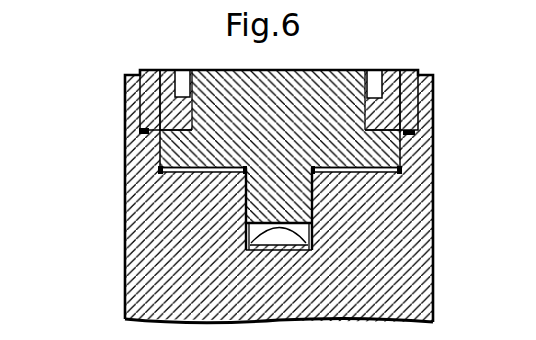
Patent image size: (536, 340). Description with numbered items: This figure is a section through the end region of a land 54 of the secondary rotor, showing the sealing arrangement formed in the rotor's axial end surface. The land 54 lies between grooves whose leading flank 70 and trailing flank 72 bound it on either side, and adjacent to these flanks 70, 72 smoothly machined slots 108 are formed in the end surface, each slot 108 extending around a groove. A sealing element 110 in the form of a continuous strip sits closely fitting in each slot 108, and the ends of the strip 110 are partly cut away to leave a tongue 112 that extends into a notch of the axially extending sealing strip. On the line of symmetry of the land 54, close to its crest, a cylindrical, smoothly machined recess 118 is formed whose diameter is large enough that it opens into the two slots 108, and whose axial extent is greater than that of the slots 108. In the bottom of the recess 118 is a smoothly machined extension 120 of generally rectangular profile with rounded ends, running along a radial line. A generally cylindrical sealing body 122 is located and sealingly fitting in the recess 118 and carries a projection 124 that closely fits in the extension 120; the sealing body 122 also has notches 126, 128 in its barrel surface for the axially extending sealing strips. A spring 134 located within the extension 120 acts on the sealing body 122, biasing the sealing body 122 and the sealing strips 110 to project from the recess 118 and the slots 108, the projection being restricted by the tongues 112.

The land 54 is at (387, 298).
The leading flank 70 is at (124, 284).
The trailing flank 72 is at (433, 278).
The slot 108 is at (157, 132).
The sealing element 110 is at (150, 80).
The tongue 112 is at (167, 113).
The recess 118 is at (160, 170).
The extension 120 is at (247, 242).
The sealing body 122 is at (350, 87).
The projection 124 is at (300, 203).
The notch 126 is at (184, 82).
The notch 128 is at (377, 80).
The spring 134 is at (297, 235).